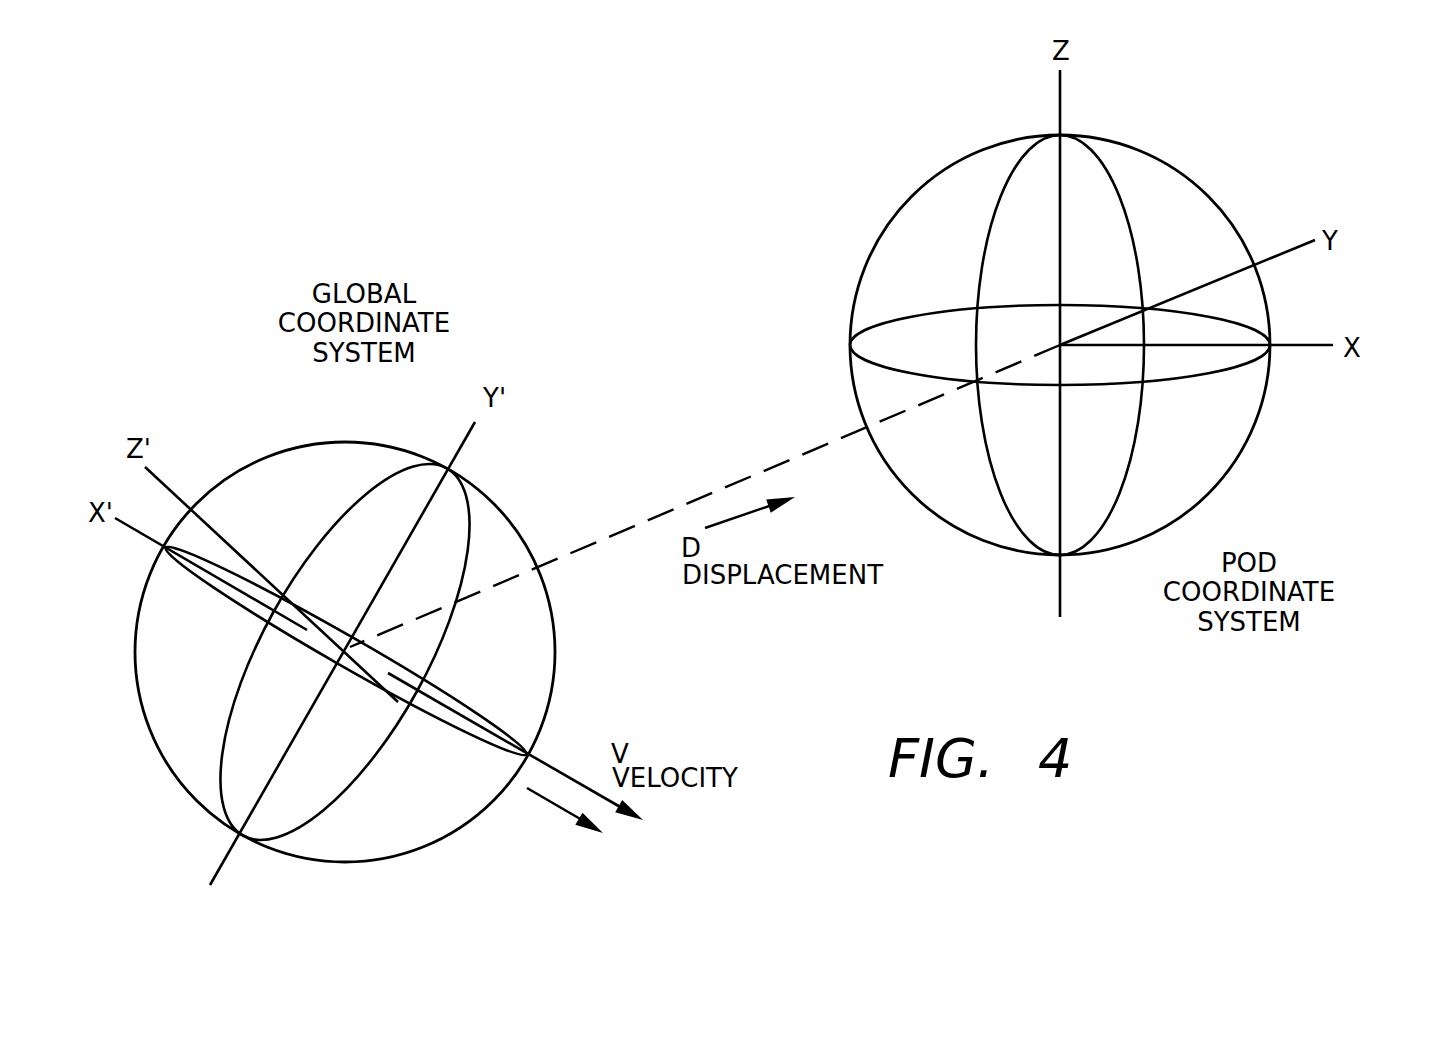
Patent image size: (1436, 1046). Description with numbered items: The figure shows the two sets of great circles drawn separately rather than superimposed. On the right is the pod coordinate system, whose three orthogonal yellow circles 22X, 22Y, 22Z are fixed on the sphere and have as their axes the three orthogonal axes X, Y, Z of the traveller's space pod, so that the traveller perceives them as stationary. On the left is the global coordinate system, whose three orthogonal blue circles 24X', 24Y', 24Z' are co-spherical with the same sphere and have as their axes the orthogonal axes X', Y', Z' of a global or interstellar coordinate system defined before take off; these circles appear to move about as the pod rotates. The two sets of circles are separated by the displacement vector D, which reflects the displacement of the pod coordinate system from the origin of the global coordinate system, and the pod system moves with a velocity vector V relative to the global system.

The yellow circle 22X is at (1114, 177).
The yellow circle 22Y is at (919, 186).
The yellow circle 22Z is at (900, 314).
The blue circle 24X' is at (400, 652).
The blue circle 24Y' is at (346, 651).
The blue circle 24Z' is at (381, 652).